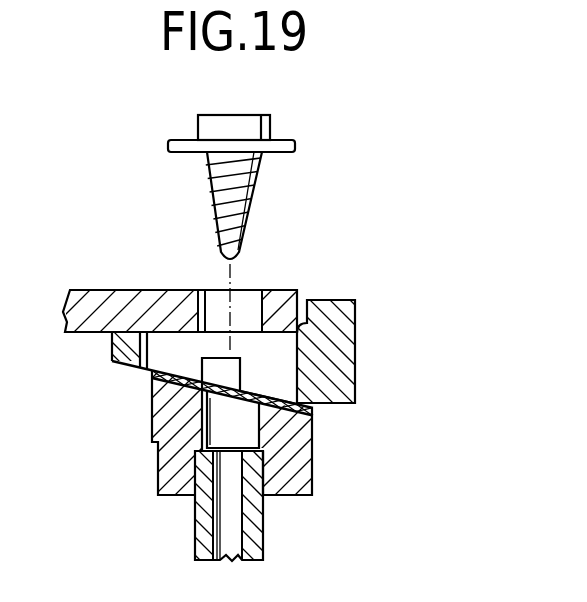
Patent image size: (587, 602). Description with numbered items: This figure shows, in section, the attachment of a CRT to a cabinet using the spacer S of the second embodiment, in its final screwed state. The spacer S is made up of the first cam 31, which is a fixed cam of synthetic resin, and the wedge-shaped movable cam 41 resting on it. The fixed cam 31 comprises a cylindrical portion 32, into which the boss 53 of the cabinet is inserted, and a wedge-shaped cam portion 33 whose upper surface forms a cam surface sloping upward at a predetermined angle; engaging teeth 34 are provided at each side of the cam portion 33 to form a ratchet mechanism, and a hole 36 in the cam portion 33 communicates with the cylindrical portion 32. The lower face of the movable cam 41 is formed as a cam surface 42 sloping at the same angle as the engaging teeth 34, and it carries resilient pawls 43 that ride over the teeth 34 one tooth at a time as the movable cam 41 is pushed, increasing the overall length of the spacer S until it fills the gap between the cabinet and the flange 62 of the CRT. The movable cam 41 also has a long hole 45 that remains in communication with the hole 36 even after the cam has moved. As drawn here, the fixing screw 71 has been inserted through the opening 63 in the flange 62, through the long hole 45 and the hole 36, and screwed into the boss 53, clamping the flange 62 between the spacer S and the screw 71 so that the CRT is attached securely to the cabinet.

The fixing screw 71 is at (256, 133).
The flange 62 is at (103, 304).
The screw hole 63 is at (252, 297).
The movable cam 41 is at (369, 290).
The spacer S is at (388, 343).
The cam surface 42 is at (125, 362).
The pawl 43 is at (222, 378).
The long hole 45 is at (263, 377).
The first cam 31 is at (245, 463).
The cylindrical portion 32 is at (245, 447).
The cam portion 33 is at (163, 423).
The engaging teeth 34 is at (242, 428).
The hole 36 is at (310, 445).
The boss 53 is at (205, 527).